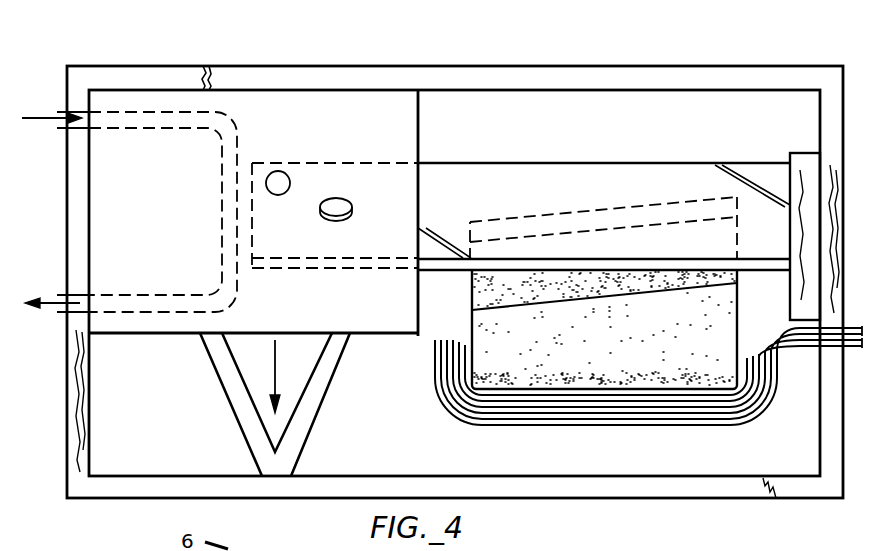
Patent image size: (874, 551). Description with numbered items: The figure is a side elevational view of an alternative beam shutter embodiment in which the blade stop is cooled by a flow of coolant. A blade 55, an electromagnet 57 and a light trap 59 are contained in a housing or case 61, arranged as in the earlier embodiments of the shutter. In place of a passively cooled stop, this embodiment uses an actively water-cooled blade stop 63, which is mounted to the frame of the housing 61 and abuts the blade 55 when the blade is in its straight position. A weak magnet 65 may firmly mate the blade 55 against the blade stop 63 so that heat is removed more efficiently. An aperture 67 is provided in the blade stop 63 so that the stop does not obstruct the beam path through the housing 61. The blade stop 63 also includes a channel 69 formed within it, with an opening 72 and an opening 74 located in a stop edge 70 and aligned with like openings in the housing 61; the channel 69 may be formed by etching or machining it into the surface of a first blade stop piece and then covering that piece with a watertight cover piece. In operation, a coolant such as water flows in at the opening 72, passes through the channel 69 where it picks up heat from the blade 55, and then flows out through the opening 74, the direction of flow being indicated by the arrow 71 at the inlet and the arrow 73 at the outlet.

The blade 55 is at (447, 163).
The electromagnet 57 is at (448, 337).
The light trap 59 is at (322, 381).
The housing 61 is at (228, 72).
The blade stop 63 is at (328, 108).
The weak magnet 65 is at (341, 200).
The aperture 67 is at (264, 195).
The channel 69 is at (186, 130).
The stop edge 70 is at (92, 180).
The arrow 71 is at (66, 113).
The opening 72 is at (62, 127).
The arrow 73 is at (66, 310).
The opening 74 is at (66, 293).